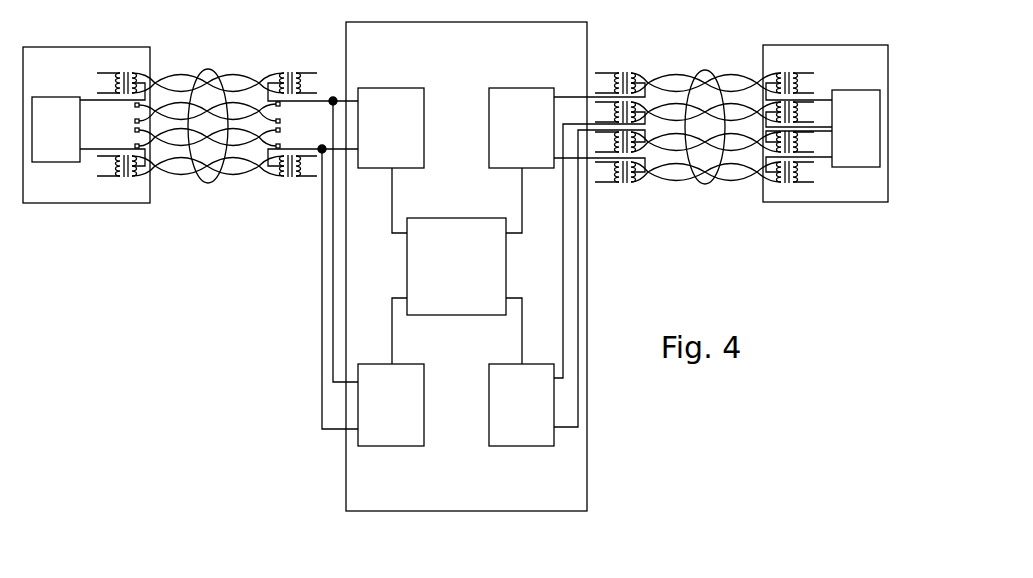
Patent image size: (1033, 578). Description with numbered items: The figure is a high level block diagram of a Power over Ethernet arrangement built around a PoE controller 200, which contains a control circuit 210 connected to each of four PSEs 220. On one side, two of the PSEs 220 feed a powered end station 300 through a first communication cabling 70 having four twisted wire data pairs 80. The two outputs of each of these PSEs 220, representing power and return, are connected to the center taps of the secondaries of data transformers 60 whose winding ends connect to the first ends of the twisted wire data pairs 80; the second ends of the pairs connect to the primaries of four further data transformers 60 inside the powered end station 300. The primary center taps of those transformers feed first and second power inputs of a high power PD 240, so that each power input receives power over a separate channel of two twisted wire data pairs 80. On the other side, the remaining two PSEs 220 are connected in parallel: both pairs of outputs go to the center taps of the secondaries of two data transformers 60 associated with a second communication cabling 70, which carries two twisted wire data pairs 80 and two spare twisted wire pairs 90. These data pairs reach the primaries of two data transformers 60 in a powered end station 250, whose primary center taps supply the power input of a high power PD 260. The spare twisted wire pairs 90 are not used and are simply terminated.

The data transformer 60 is at (121, 72).
The communication cabling 70 is at (208, 71).
The twisted wire data pair 80 is at (185, 76).
The spare twisted wire pair 90 is at (271, 112).
The PoE controller 200 is at (440, 512).
The control circuit 210 is at (439, 317).
The PSE 220 is at (399, 87).
The high power PD 240 is at (874, 167).
The powered end station 250 is at (75, 204).
The high power PD 260 is at (40, 163).
The powered end station 300 is at (839, 203).